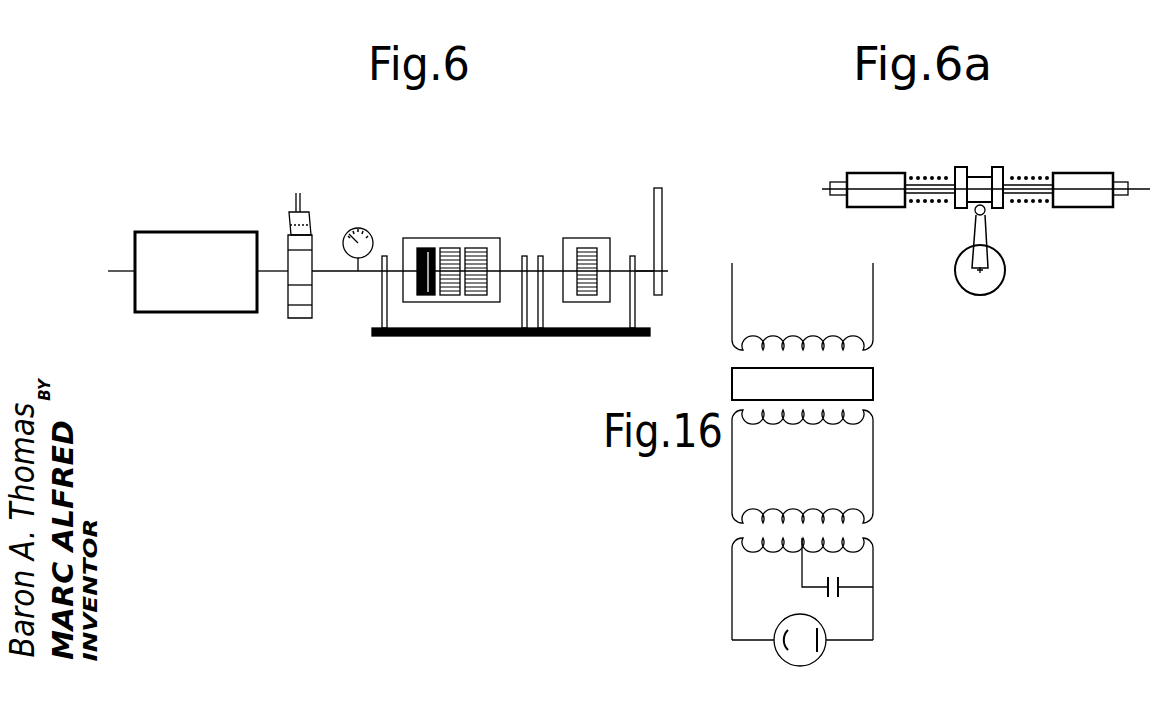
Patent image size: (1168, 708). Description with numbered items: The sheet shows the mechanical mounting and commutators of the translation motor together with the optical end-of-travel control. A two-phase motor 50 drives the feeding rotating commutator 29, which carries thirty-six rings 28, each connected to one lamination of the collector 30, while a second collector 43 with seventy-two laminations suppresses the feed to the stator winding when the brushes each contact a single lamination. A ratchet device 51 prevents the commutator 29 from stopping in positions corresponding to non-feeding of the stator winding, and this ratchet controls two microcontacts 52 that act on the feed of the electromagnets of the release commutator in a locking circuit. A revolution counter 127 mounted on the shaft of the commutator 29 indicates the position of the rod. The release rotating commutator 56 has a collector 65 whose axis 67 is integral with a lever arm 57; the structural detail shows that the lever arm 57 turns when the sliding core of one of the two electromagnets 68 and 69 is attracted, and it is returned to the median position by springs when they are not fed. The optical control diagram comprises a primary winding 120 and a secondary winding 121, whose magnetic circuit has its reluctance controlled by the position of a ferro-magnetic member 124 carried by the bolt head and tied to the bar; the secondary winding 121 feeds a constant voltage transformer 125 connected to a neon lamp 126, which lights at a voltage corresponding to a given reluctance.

In FIG. 6, the two-phase motor 50 is at (180, 255).
In FIG. 6, the ratchet device 51 is at (303, 247).
In FIG. 6, the microcontacts 52 is at (298, 193).
In FIG. 6, the revolution counter 127 is at (363, 237).
In FIG. 6, the rings 28 is at (430, 250).
In FIG. 6, the rotating commutator 29 is at (449, 302).
In FIG. 6, the collector 30 is at (452, 258).
In FIG. 6, the second collector 43 is at (477, 267).
In FIG. 6, the release rotating commutator 56 is at (592, 238).
In FIG. 6, the collector 65 is at (586, 295).
In FIG. 6A, the collector 65 is at (1000, 283).
In FIG. 6, the lever arm 57 is at (663, 240).
In FIG. 6A, the lever arm 57 is at (990, 234).
In FIG. 6, the axis 67 is at (643, 273).
In FIG. 6A, the electromagnet 68 is at (875, 188).
In FIG. 6A, the electromagnet 69 is at (1080, 185).
In FIG. 16, the primary winding 120 is at (873, 349).
In FIG. 16, the ferro-magnetic member 124 is at (865, 385).
In FIG. 16, the secondary winding 121 is at (866, 423).
In FIG. 16, the constant voltage transformer 125 is at (863, 532).
In FIG. 16, the neon lamp 126 is at (817, 652).